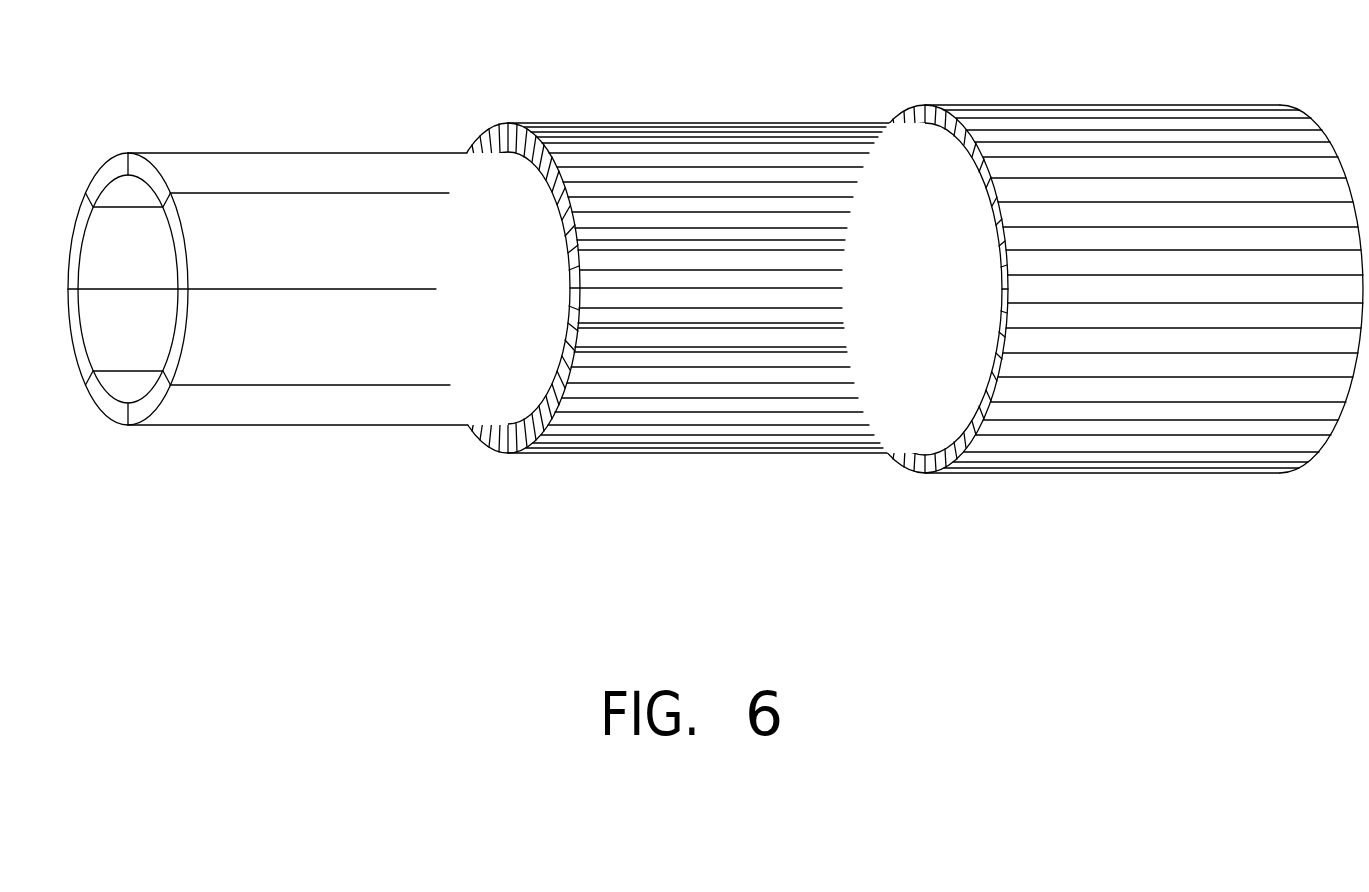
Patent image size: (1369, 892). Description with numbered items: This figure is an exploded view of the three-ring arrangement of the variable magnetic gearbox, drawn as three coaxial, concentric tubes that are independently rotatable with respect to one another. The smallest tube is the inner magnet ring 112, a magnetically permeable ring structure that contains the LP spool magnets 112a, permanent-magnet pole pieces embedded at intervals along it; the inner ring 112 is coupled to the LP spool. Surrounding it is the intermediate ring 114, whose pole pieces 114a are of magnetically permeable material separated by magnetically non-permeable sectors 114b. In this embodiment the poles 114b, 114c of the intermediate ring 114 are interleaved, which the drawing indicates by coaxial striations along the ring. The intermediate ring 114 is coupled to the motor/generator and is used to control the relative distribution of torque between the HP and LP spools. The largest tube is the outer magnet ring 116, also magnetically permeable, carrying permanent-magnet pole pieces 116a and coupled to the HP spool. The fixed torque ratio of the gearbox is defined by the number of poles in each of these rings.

The inner magnet ring 112 is at (252, 294).
The magnetic pole pieces 112a is at (176, 432).
The intermediate ring 114 is at (619, 294).
The magnetic pole pieces 114a is at (497, 466).
The magnetically non-permeable sectors 114b is at (692, 121).
The poles of the intermediate ring 114c is at (697, 370).
The outer magnet ring 116 is at (1054, 293).
The magnetic pole pieces 116a is at (889, 491).